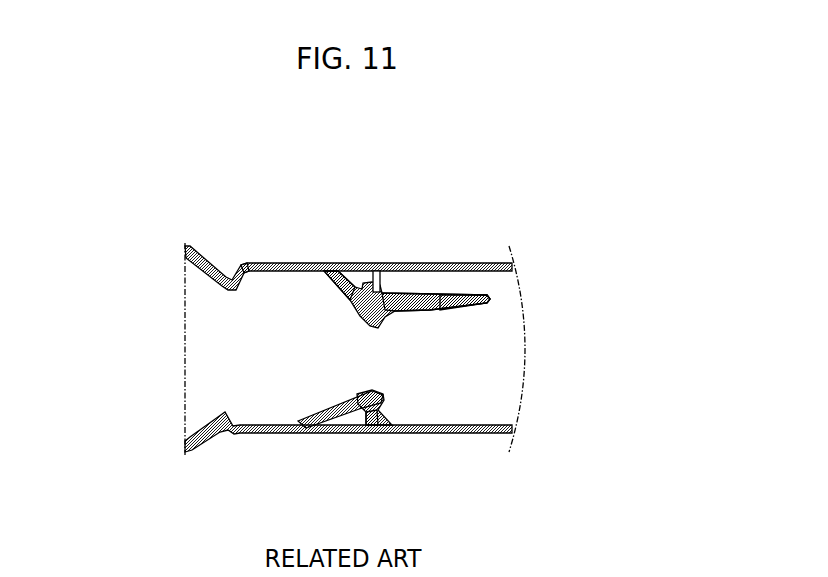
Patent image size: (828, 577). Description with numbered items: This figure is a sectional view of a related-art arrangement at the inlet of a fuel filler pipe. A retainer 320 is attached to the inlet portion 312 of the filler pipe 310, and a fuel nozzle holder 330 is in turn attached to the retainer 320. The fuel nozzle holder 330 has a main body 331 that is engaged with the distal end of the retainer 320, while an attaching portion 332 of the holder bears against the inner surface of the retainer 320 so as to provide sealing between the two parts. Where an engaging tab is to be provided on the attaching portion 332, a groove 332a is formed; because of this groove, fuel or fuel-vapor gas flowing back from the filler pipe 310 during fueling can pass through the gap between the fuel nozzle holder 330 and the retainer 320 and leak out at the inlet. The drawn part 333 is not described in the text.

The filler pipe 310 is at (362, 312).
The inlet portion 312 is at (371, 222).
The retainer 320 is at (193, 230).
The fuel nozzle holder 330 is at (283, 313).
The main body 331 is at (423, 353).
The attaching portion 332 is at (344, 354).
The groove 332a is at (330, 416).
The blade tip 333 is at (530, 328).